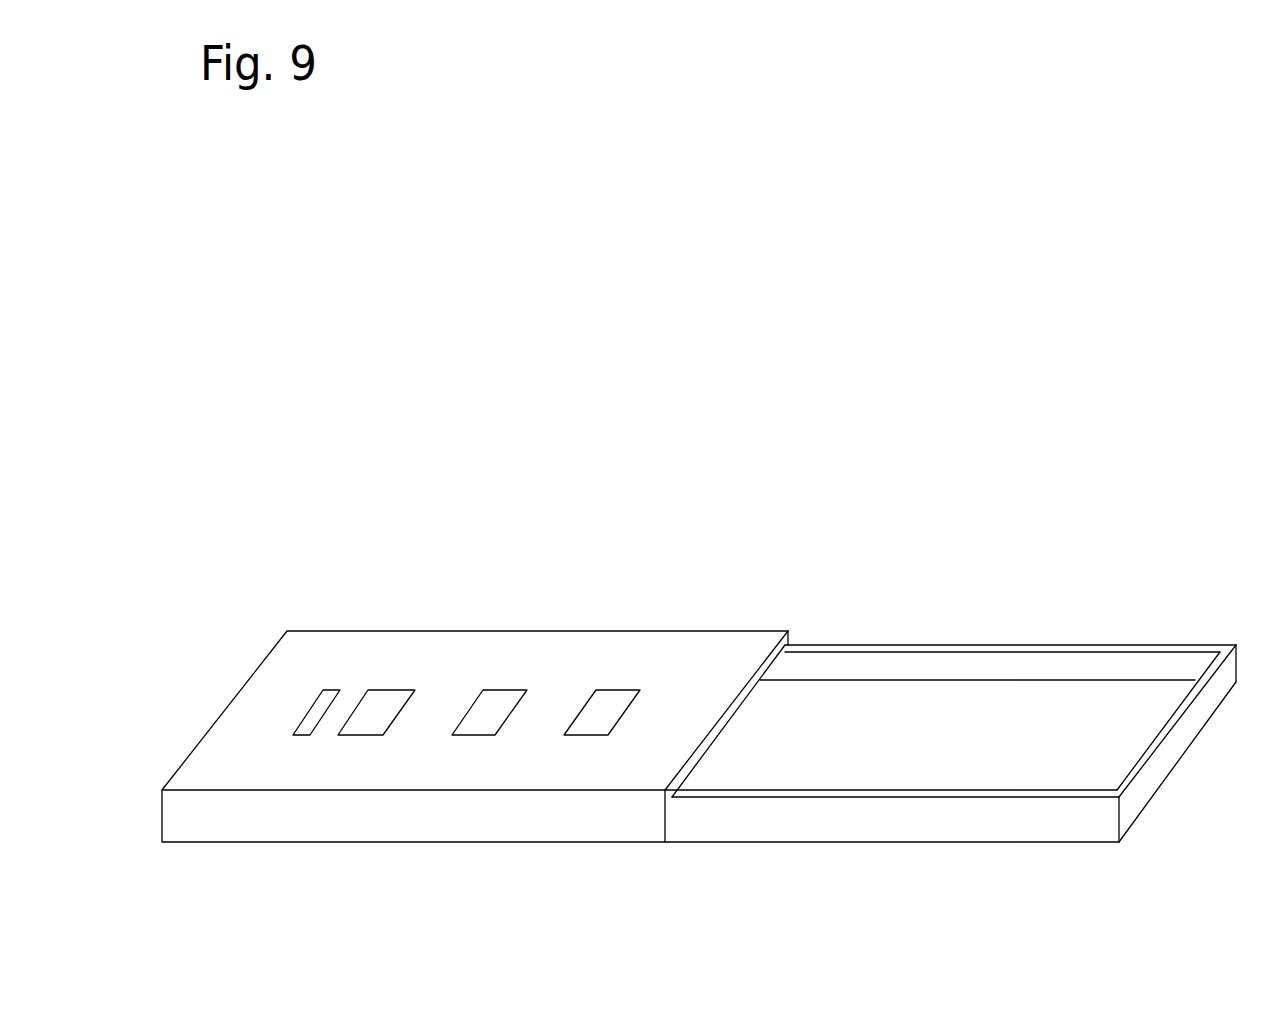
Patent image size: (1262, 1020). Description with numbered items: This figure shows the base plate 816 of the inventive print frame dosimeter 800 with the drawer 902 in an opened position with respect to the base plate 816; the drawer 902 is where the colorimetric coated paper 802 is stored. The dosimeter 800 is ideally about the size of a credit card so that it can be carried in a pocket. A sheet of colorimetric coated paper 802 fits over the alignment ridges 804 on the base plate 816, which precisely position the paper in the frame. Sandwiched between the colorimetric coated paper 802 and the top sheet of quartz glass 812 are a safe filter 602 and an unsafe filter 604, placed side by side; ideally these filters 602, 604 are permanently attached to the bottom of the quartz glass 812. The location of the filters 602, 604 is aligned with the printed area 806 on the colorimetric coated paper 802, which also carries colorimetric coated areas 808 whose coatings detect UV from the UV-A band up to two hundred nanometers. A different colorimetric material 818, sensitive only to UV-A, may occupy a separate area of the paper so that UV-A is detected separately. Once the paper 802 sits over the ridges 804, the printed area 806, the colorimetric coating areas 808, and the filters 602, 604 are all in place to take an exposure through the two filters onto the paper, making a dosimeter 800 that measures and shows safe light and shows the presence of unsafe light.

The print frame dosimeter 800 is at (933, 202).
The colorimetric coated paper 802 is at (777, 638).
The alignment ridges 804 is at (177, 763).
The printed areas 806 is at (313, 710).
The colorimetric coated areas 808 is at (369, 720).
The quartz glass 812 is at (300, 650).
The base plate 816 is at (257, 815).
The colorimetric material 818 is at (615, 705).
The safe filter 602 is at (389, 705).
The unsafe filter 604 is at (502, 705).
The drawer 902 is at (902, 738).